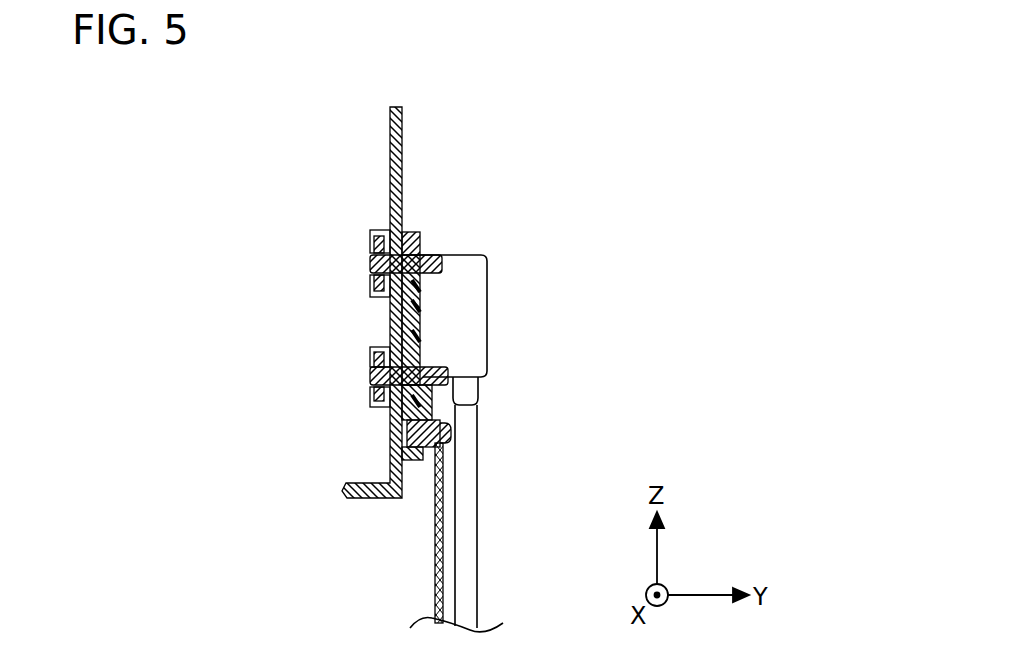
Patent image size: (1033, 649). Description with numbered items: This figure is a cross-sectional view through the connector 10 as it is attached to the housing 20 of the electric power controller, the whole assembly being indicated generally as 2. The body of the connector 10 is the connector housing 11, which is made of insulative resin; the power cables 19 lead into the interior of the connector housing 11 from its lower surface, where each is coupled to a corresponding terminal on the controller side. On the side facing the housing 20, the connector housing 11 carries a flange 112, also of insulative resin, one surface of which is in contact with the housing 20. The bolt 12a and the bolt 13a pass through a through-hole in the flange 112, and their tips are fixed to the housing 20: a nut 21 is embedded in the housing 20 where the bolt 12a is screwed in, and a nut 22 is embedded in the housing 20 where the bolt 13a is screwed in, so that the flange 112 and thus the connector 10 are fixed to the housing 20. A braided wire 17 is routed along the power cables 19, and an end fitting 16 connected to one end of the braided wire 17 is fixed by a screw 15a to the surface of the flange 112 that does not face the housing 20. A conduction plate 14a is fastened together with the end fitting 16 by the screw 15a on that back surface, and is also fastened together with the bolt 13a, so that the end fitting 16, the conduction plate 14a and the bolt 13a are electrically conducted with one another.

The vehicle / assembly 2 is at (500, 88).
The housing 20 is at (390, 140).
The flange 112 is at (408, 235).
The bolt 12a is at (430, 260).
The connector 10 is at (489, 242).
The nut 21 is at (378, 247).
The connector housing 11 is at (481, 285).
The conduction plate 14a is at (432, 350).
The bolt 13a is at (447, 377).
The nut 22 is at (378, 362).
The screw 15a is at (448, 436).
The end fitting 16 is at (437, 447).
The braided wire 17 is at (437, 555).
The power cables 19 is at (465, 545).